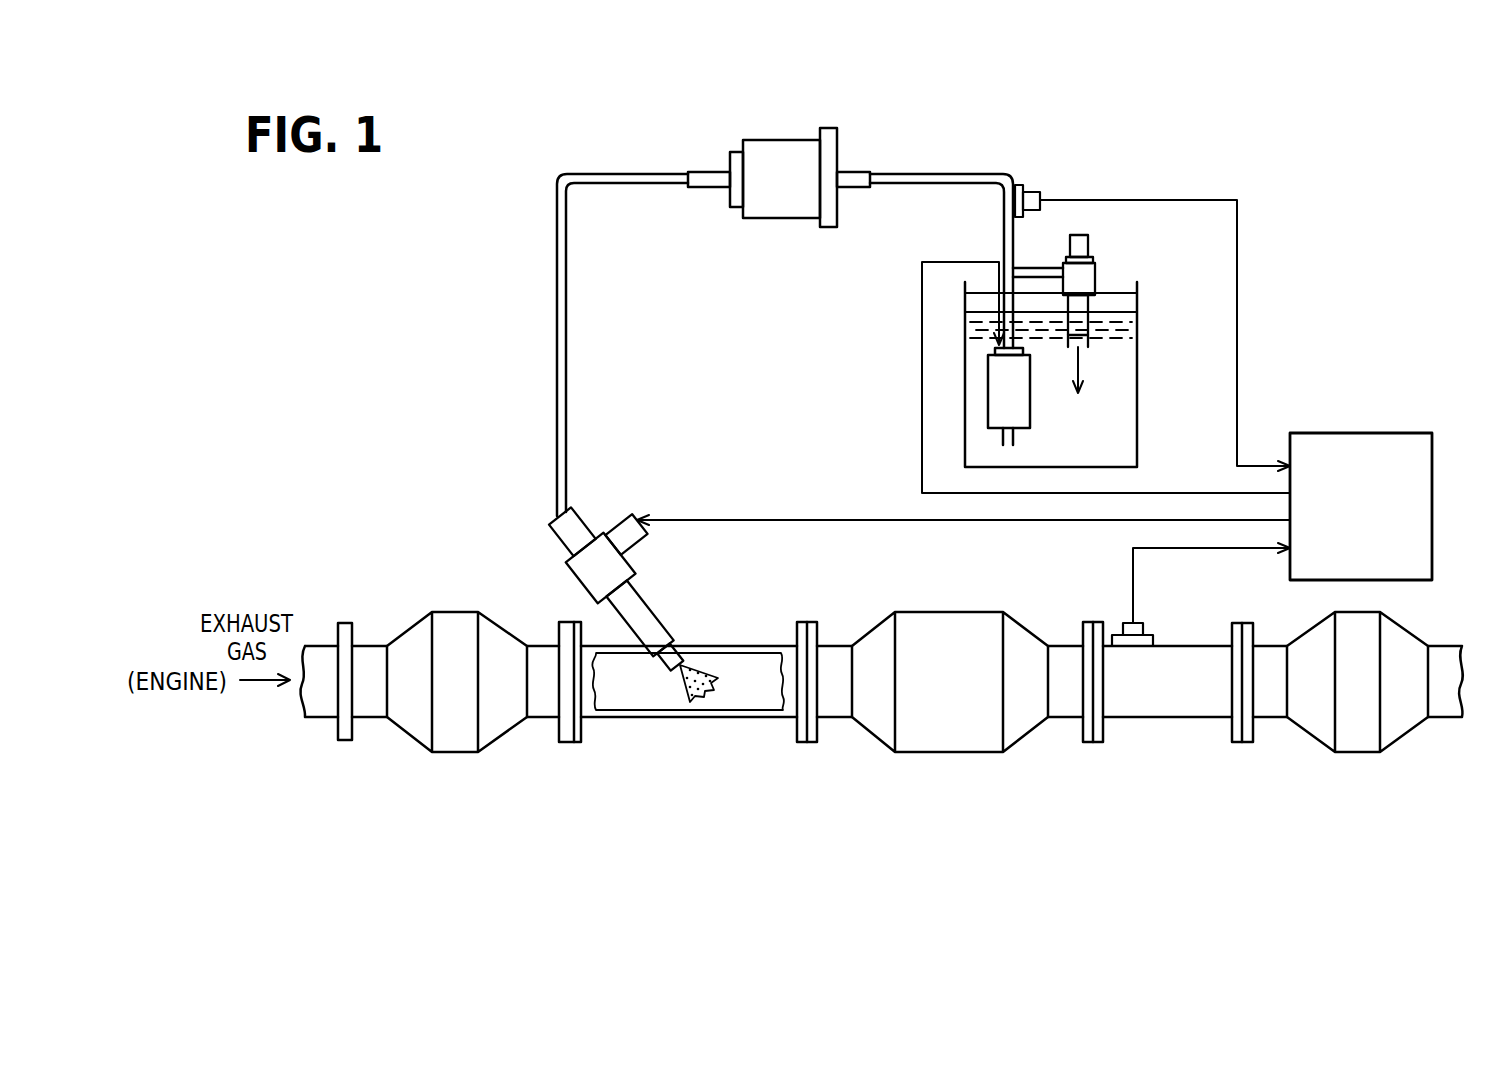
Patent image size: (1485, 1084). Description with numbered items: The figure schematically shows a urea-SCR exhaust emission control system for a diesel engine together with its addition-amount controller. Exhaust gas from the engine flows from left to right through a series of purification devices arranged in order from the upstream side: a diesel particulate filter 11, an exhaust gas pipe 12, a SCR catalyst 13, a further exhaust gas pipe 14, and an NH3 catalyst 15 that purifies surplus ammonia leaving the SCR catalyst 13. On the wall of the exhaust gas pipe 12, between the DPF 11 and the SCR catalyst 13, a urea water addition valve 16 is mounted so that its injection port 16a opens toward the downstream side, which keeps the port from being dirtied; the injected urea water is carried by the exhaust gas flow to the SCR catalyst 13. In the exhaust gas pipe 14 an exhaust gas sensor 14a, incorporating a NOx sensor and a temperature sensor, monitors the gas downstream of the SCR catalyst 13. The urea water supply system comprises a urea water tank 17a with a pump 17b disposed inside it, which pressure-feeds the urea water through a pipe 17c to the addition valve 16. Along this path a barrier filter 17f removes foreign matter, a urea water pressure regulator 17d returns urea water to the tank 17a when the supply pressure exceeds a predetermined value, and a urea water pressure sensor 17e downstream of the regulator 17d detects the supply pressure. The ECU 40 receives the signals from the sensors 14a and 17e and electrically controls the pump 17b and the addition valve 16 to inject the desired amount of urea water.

The diesel particulate filter 11 is at (453, 612).
The exhaust gas pipe 12 is at (746, 718).
The SCR catalyst 13 is at (950, 612).
The exhaust gas pipe 14 is at (1203, 718).
The exhaust gas sensor 14a is at (1148, 635).
The NH3 catalyst 15 is at (1358, 752).
The urea water addition valve 16 is at (598, 508).
The injection port 16a is at (692, 662).
The urea water tank 17a is at (1137, 440).
The pump 17b is at (995, 392).
The pipe 17c is at (625, 174).
The urea water pressure regulator 17d is at (1095, 278).
The urea water pressure sensor 17e is at (1032, 192).
The barrier filter 17f is at (780, 140).
The ECU 40 is at (1357, 433).